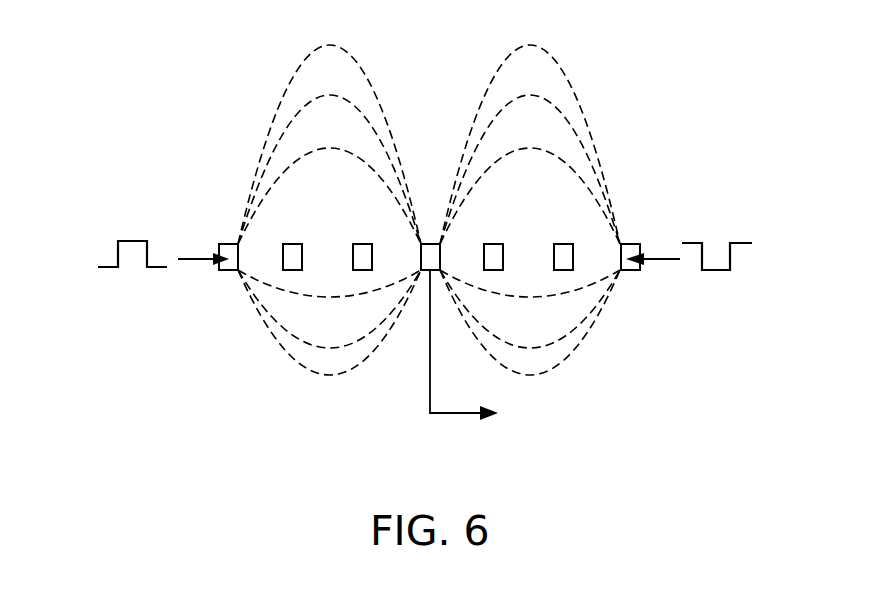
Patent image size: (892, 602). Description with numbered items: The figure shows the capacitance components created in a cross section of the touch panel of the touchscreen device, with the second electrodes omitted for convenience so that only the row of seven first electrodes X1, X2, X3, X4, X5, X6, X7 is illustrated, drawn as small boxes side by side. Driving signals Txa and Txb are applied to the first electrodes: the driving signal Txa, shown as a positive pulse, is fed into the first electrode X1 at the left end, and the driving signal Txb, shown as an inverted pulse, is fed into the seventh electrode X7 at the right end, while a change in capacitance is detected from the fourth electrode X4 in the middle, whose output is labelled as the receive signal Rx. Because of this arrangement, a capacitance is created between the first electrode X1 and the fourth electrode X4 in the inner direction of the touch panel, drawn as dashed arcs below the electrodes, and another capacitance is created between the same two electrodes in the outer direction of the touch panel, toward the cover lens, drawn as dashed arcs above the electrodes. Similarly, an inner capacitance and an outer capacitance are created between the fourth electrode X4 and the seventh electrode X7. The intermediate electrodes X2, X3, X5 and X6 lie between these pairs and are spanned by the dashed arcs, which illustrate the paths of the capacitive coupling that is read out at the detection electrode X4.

The driving signal Txa is at (163, 239).
The driving signal Txb is at (689, 241).
The receive signal output Rx is at (464, 357).
The first electrode X1 is at (226, 245).
The first electrode X2 is at (292, 245).
The first electrode X3 is at (362, 245).
The first electrode X4 is at (414, 256).
The first electrode X5 is at (493, 245).
The first electrode X6 is at (563, 245).
The first electrode X7 is at (640, 245).